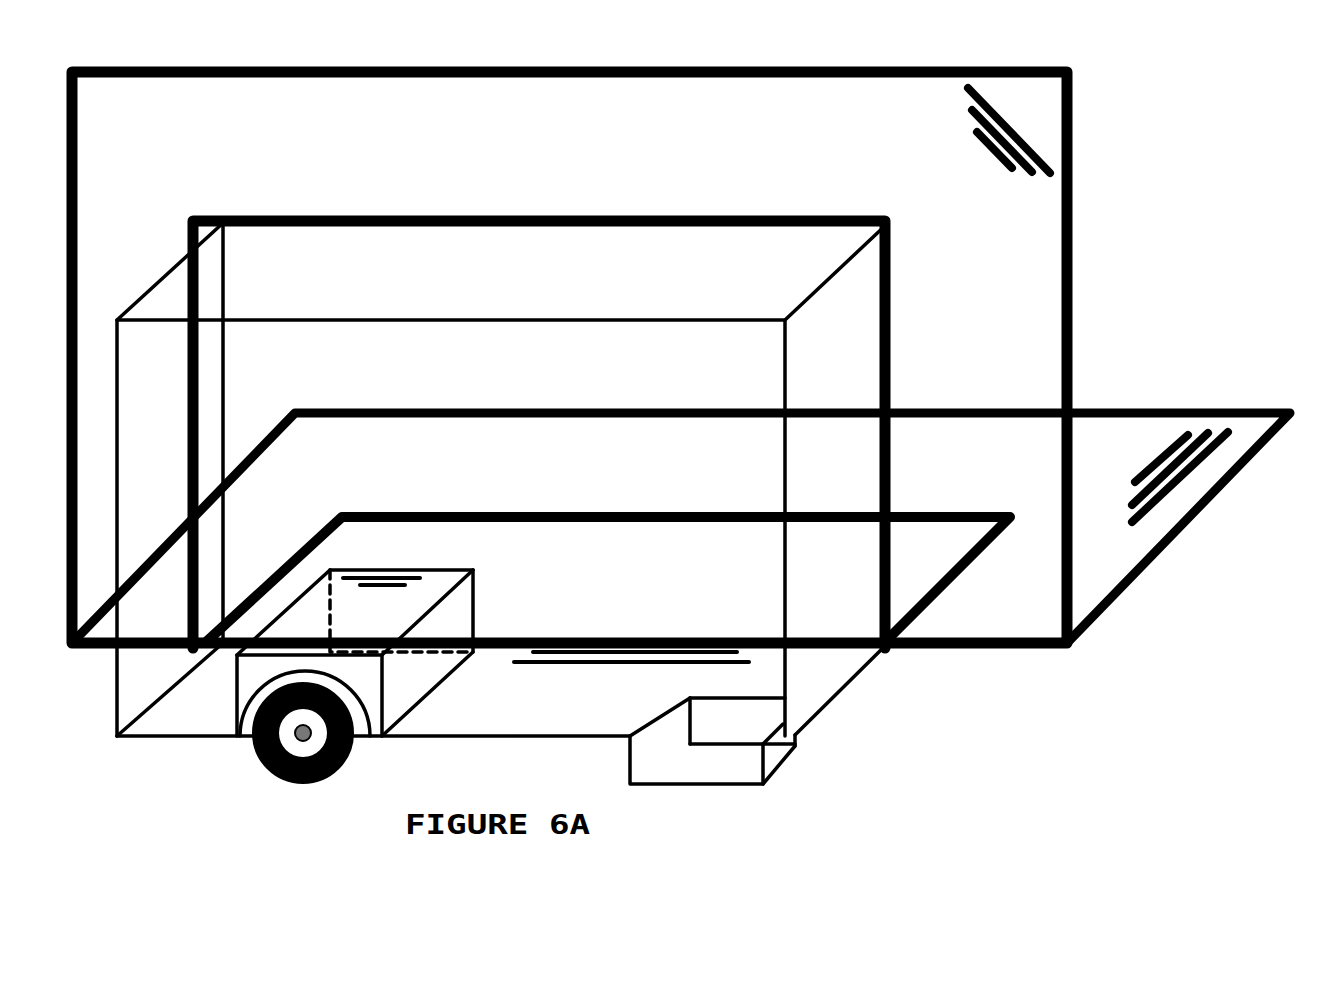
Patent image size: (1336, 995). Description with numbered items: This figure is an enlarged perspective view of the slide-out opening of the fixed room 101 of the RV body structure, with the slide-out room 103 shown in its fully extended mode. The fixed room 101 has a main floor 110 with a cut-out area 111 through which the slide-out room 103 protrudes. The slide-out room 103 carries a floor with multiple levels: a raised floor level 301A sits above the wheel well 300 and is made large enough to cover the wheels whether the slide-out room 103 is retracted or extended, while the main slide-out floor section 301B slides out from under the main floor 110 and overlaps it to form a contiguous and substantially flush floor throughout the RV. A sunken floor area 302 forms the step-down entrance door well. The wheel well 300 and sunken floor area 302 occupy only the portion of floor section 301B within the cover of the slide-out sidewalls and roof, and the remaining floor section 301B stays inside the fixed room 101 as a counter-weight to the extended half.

The fixed room 101 is at (1023, 127).
The slide-out room 103 is at (180, 256).
The main floor 110 is at (1180, 478).
The cut-out area 111 is at (655, 511).
The wheel well 300 is at (321, 607).
The floor level above the wheel well 301A is at (413, 595).
The main slide-out floor section 301B is at (600, 643).
The sunken floor area 302 is at (773, 763).